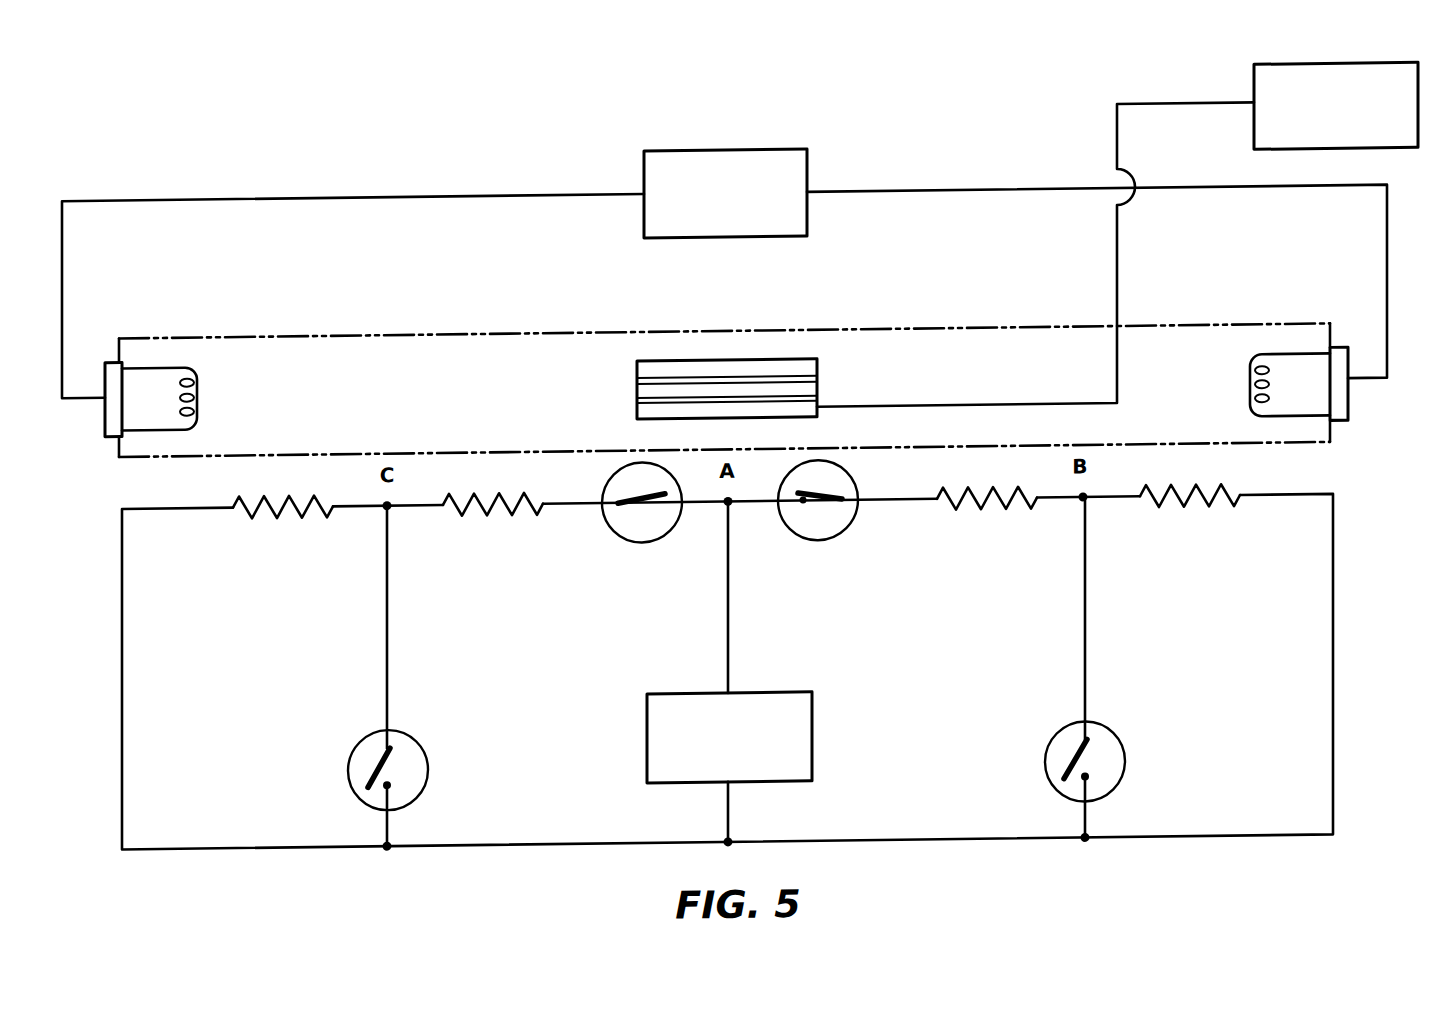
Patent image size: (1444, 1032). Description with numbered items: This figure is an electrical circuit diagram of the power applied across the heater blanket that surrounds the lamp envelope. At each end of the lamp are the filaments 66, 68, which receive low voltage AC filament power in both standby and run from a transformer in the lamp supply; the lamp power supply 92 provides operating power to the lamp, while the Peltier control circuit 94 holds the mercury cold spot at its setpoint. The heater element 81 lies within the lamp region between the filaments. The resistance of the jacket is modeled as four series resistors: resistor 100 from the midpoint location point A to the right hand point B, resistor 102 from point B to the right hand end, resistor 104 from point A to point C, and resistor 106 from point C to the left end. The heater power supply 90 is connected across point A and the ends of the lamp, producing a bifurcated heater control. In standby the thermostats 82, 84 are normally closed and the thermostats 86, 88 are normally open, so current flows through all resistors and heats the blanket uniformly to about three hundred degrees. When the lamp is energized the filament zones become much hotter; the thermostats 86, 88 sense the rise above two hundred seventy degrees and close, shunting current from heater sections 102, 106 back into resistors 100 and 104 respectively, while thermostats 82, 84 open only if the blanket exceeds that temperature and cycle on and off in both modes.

The filament 66 is at (185, 385).
The filament 68 is at (1258, 433).
The heater element 81 is at (660, 378).
The thermostat 82 is at (630, 546).
The thermostat 84 is at (828, 542).
The thermostat 86 is at (423, 750).
The thermostat 88 is at (1118, 751).
The heater power supply 90 is at (815, 743).
The lamp power supply 92 is at (658, 175).
The Peltier control circuit 94 is at (1273, 99).
The resistor 100 is at (990, 518).
The resistor 102 is at (1197, 519).
The resistor 104 is at (505, 520).
The resistor 106 is at (277, 521).